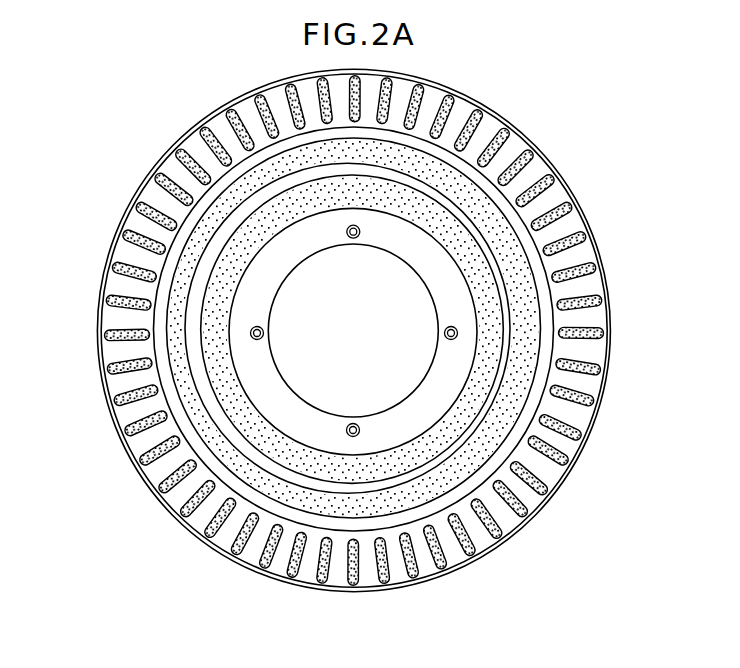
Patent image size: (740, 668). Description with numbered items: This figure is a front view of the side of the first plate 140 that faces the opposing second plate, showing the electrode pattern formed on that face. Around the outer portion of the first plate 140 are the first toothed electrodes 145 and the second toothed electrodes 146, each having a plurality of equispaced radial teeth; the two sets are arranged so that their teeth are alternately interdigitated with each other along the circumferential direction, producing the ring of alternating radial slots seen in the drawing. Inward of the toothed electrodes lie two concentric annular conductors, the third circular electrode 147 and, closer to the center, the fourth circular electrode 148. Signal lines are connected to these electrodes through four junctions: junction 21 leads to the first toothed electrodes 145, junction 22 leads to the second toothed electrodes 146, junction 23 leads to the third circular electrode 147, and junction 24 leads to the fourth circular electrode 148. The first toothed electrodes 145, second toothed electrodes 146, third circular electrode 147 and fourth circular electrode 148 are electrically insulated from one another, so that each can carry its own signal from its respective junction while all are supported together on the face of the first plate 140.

The first plate 140 is at (613, 357).
The junction 21 is at (549, 335).
The junction 22 is at (151, 306).
The junction 23 is at (353, 529).
The junction 24 is at (352, 208).
The first toothed electrodes 145 is at (552, 443).
The second toothed electrodes 146 is at (594, 377).
The third circular electrode 147 is at (522, 276).
The fourth circular electrode 148 is at (469, 248).